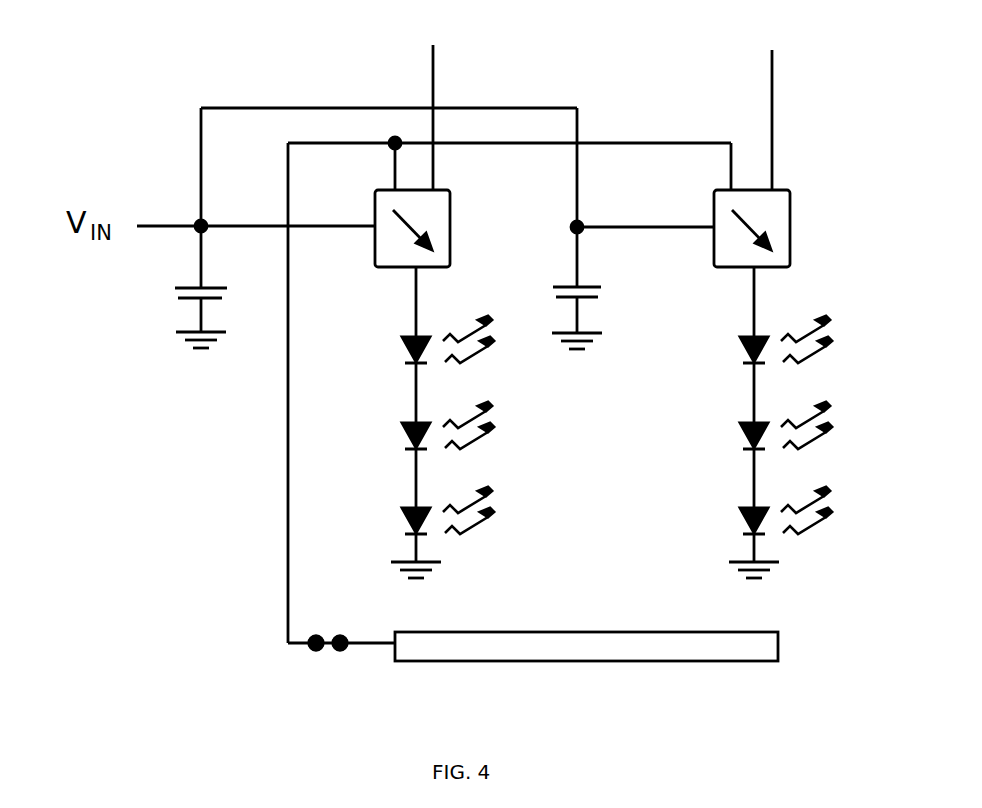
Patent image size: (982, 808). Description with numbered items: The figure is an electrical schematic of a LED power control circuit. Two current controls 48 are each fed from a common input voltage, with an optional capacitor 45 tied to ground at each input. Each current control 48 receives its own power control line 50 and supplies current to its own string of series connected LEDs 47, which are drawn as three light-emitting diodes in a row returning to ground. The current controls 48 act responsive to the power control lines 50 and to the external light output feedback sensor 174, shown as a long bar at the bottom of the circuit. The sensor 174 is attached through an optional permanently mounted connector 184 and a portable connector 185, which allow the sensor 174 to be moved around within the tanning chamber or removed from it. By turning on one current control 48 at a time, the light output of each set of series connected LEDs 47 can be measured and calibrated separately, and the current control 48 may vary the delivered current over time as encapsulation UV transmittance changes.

The capacitor 45 is at (167, 295).
The series connected LEDs 47 is at (397, 433).
The current control 48 is at (452, 223).
The power control line 50 is at (433, 92).
The external light output feedback sensor 174 is at (780, 645).
The permanently mounted connector 184 is at (312, 652).
The portable connector 185 is at (345, 652).